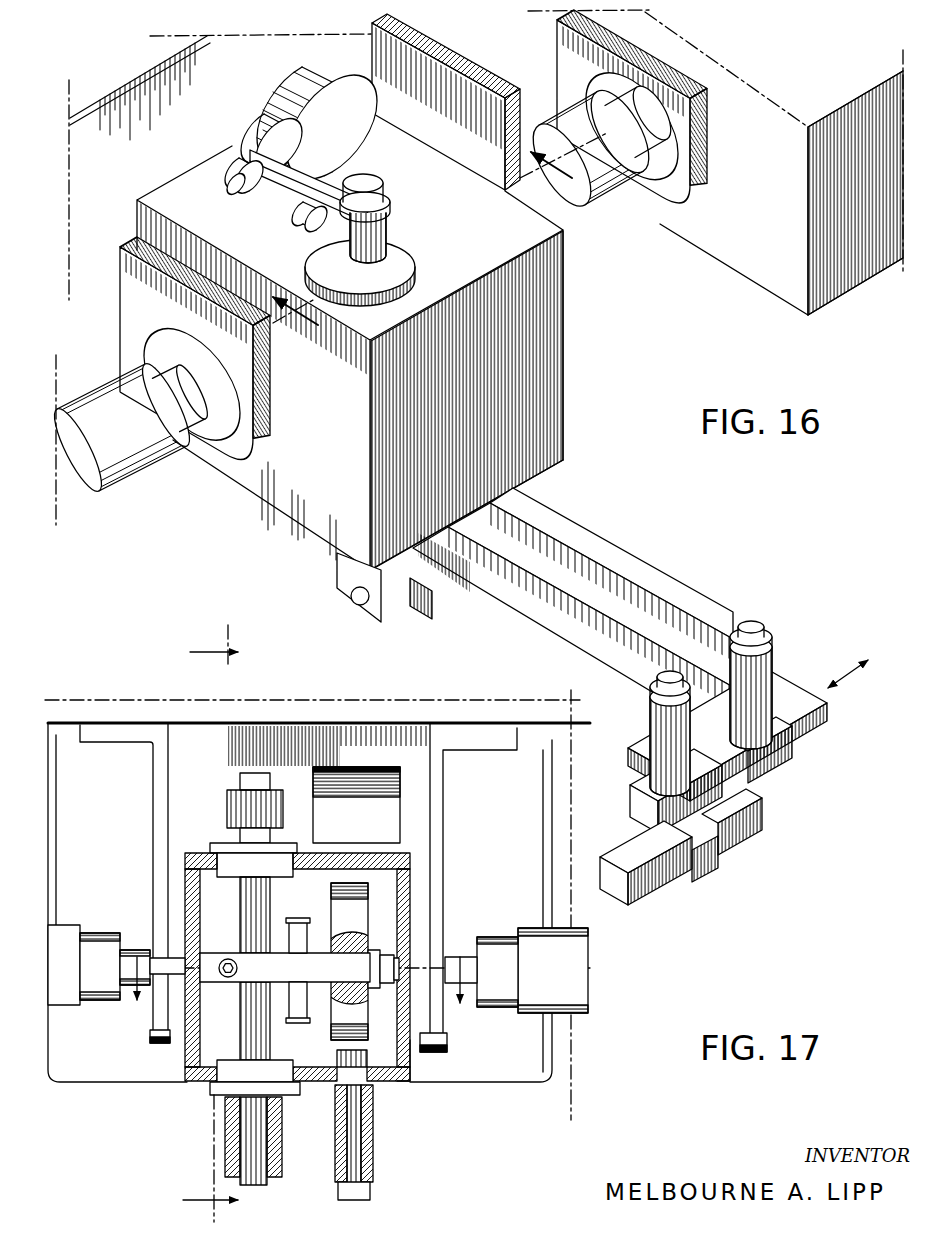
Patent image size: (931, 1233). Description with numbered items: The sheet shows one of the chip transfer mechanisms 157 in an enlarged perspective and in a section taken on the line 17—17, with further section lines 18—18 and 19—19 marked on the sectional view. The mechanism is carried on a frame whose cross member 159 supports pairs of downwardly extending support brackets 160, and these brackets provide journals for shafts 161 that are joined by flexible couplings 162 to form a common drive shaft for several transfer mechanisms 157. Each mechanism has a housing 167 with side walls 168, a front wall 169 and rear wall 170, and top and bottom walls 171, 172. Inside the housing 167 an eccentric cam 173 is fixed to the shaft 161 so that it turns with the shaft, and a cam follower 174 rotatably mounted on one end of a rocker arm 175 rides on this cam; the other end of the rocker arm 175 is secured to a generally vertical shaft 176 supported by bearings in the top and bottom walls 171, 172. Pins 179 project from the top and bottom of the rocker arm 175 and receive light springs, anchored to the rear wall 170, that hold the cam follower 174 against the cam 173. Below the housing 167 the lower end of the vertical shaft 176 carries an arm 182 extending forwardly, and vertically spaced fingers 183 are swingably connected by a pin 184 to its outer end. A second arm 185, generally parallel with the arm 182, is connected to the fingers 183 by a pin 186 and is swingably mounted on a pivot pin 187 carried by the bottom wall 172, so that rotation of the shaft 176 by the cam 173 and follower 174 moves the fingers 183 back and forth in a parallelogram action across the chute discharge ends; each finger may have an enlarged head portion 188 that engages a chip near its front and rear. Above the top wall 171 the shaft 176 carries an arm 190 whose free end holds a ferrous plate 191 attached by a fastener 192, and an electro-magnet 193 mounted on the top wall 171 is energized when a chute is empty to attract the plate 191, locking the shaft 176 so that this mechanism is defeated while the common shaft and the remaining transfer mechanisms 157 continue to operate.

In FIG. 16, the section line 17— 17 is at (422, 223).
In FIG. 17, the section line 18— 18 is at (215, 926).
In FIG. 17, the section line 19— 19 is at (298, 997).
In FIG. 16, the chip transfer mechanism 157 is at (568, 421).
In FIG. 17, the chip transfer mechanism 157 is at (183, 1063).
In FIG. 17, the cross member 159 is at (330, 712).
In FIG. 16, the support bracket 160 is at (262, 407).
In FIG. 17, the support bracket 160 is at (153, 805).
In FIG. 16, the shaft 161 is at (178, 372).
In FIG. 17, the shaft 161 is at (130, 950).
In FIG. 16, the flexible coupling 162 is at (120, 475).
In FIG. 17, the flexible coupling 162 is at (66, 930).
In FIG. 16, the housing 167 is at (311, 534).
In FIG. 17, the housing 167 is at (413, 1066).
In FIG. 16, the side wall 168 is at (260, 507).
In FIG. 17, the side wall 168 is at (185, 900).
In FIG. 16, the front wall 169 is at (523, 453).
In FIG. 17, the rear wall 170 is at (80, 1072).
In FIG. 16, the top wall 171 is at (463, 268).
In FIG. 17, the top wall 171 is at (356, 805).
In FIG. 17, the bottom wall 172 is at (395, 1080).
In FIG. 17, the eccentric cam 173 is at (345, 897).
In FIG. 17, the cam follower 174 is at (345, 1000).
In FIG. 17, the rocker arm 175 is at (230, 990).
In FIG. 16, the vertical shaft 176 is at (375, 183).
In FIG. 17, the vertical shaft 176 is at (250, 915).
In FIG. 17, the pin 179 is at (248, 969).
In FIG. 16, the arm 182 is at (497, 620).
In FIG. 17, the arm 182 is at (227, 1133).
In FIG. 16, the finger 183 is at (780, 778).
In FIG. 16, the pin 184 is at (668, 693).
In FIG. 16, the second arm 185 is at (688, 598).
In FIG. 17, the second arm 185 is at (373, 1163).
In FIG. 16, the pin 186 is at (757, 627).
In FIG. 17, the pivot pin 187 is at (362, 1181).
In FIG. 16, the enlarged head portion 188 is at (780, 687).
In FIG. 16, the arm 190 is at (290, 197).
In FIG. 17, the arm 190 is at (240, 805).
In FIG. 16, the ferrous plate 191 is at (268, 132).
In FIG. 16, the fastener 192 is at (228, 180).
In FIG. 16, the electro-magnet 193 is at (320, 98).
In FIG. 17, the electro-magnet 193 is at (368, 777).